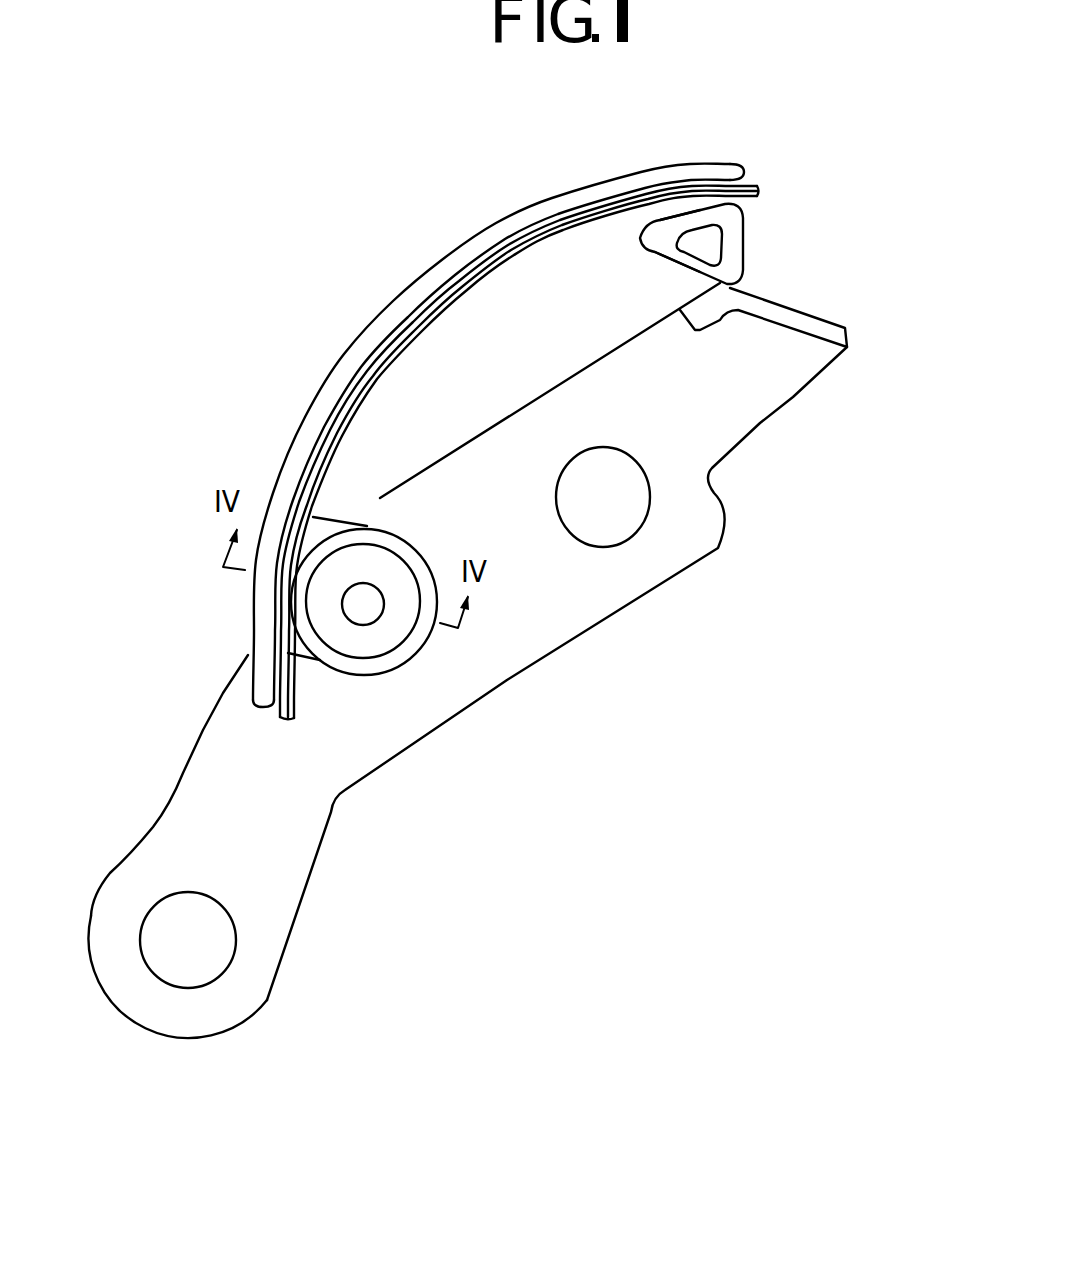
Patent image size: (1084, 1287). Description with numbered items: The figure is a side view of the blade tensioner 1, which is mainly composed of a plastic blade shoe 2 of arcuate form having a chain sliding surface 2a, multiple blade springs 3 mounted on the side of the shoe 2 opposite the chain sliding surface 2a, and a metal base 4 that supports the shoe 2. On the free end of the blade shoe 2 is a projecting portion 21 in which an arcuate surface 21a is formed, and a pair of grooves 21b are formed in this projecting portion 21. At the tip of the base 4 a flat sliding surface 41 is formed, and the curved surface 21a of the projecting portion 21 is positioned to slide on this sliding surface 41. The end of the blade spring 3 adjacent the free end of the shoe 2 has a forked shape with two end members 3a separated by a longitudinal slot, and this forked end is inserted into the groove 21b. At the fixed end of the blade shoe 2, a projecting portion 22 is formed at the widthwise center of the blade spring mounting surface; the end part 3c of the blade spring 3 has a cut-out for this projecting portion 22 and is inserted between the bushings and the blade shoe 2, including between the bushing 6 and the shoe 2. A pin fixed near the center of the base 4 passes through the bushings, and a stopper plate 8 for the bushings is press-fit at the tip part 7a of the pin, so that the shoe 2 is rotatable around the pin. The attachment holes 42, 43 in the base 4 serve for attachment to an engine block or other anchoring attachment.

The blade tensioner 1 is at (343, 195).
The blade shoe 2 is at (498, 408).
The chain sliding surface 2a is at (523, 203).
The blade spring 3 is at (539, 487).
The end member 3a is at (755, 172).
The end part of blade spring 3c is at (268, 721).
The base 4 is at (528, 703).
The bushing 6 is at (410, 650).
The tip part of pin 7a is at (371, 612).
The stopper plate 8 is at (395, 567).
The projecting portion of shoe 21 is at (688, 280).
The arcuate surface 21a is at (677, 273).
The groove 21b is at (650, 222).
The projecting portion 22 is at (327, 520).
The sliding surface 41 is at (828, 320).
The attachment hole 42 is at (652, 510).
The attachment hole 43 is at (184, 978).